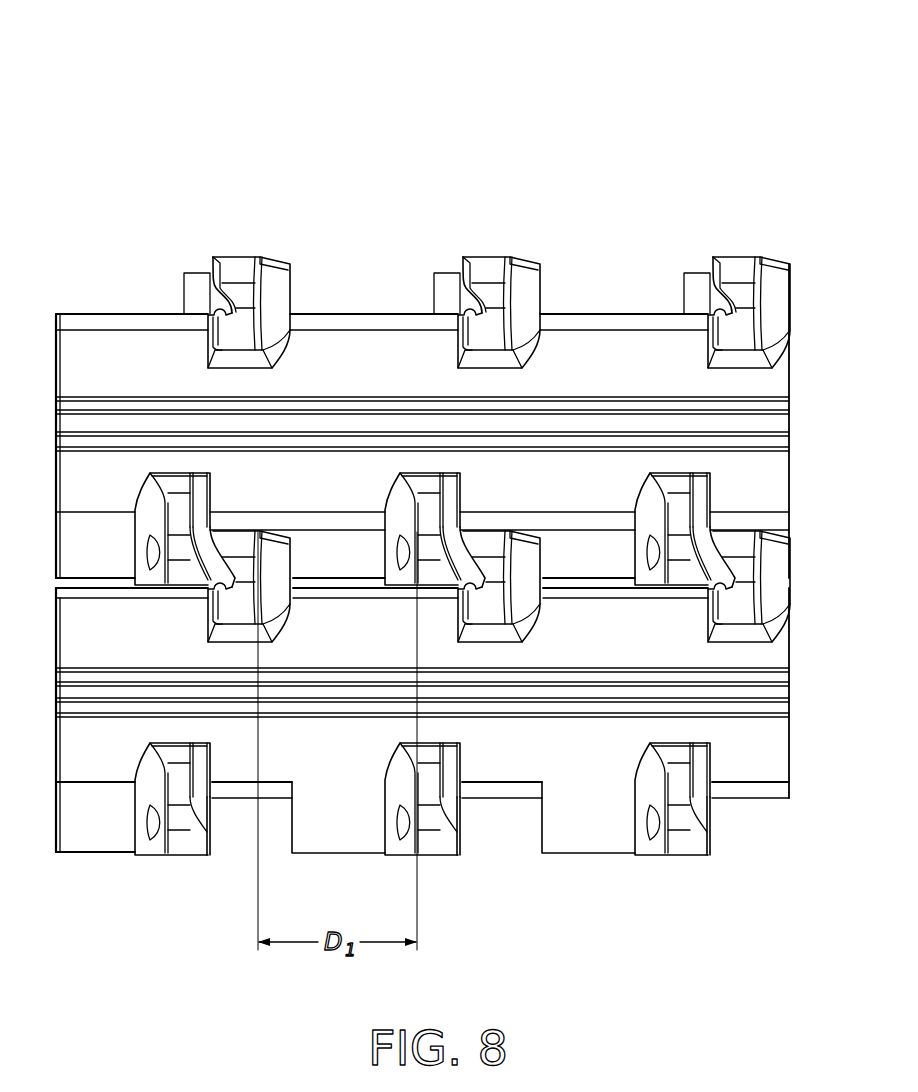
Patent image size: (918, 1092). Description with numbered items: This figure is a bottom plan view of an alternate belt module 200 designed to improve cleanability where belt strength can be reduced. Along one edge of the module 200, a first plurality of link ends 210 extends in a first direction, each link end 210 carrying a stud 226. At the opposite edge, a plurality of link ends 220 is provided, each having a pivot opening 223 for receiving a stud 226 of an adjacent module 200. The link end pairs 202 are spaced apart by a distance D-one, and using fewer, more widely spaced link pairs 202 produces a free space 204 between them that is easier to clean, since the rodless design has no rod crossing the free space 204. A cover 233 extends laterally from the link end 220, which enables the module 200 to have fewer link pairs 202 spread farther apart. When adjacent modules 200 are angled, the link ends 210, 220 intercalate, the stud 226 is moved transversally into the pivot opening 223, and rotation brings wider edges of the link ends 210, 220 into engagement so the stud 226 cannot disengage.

The module 200 is at (711, 84).
The link ends 210 is at (232, 272).
The stud 226 is at (695, 285).
The link end pairs 202 is at (296, 478).
The free space 204 is at (335, 538).
The link ends 220 is at (187, 845).
The pivot opening 223 is at (152, 824).
The cover 233 is at (339, 822).